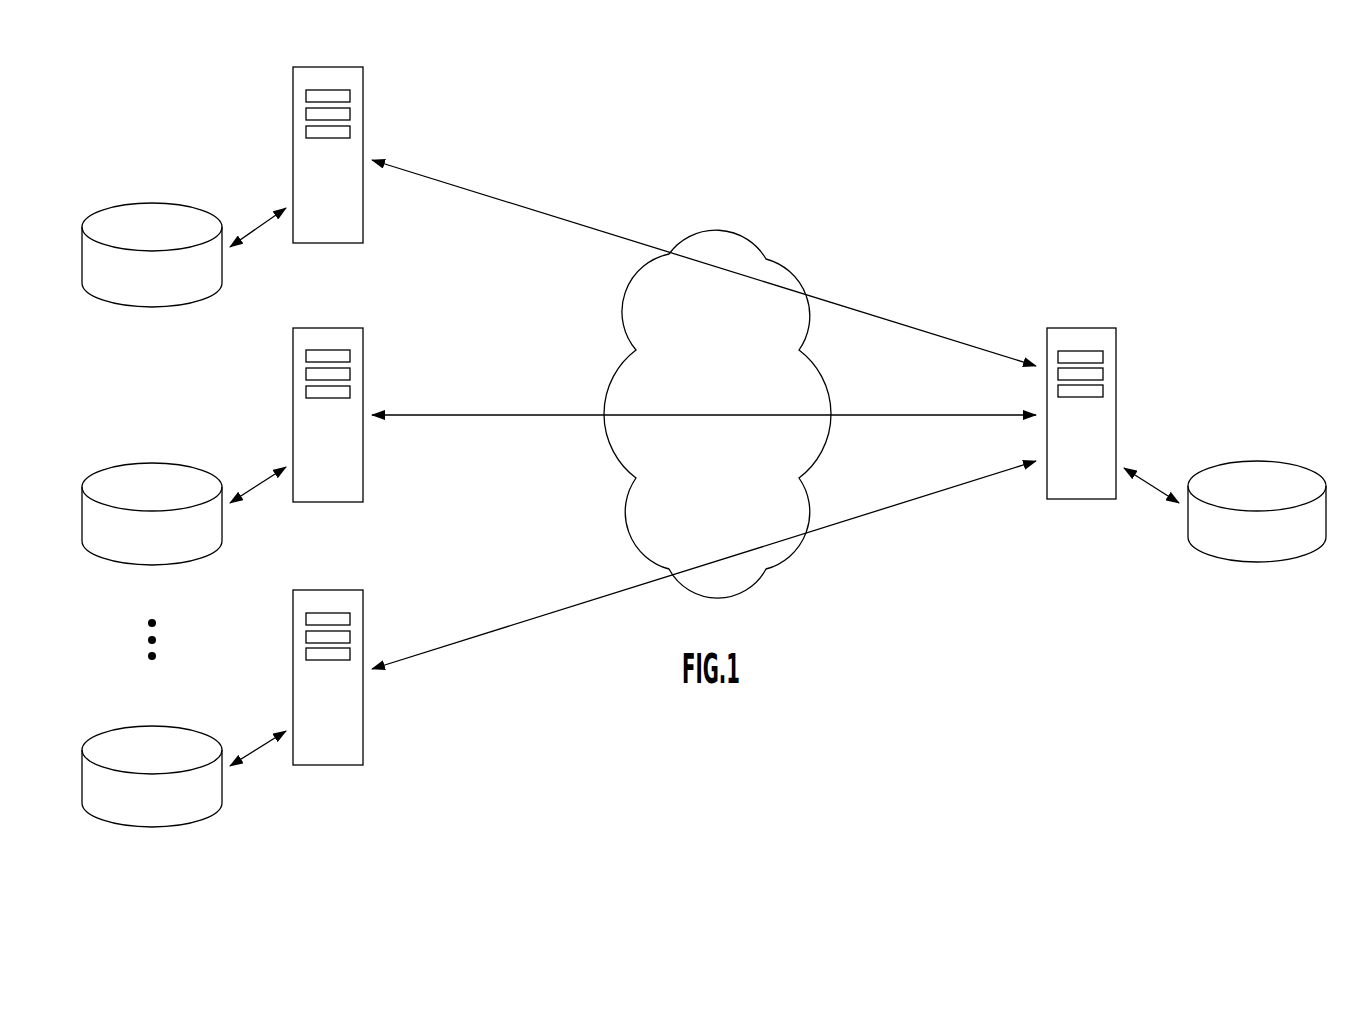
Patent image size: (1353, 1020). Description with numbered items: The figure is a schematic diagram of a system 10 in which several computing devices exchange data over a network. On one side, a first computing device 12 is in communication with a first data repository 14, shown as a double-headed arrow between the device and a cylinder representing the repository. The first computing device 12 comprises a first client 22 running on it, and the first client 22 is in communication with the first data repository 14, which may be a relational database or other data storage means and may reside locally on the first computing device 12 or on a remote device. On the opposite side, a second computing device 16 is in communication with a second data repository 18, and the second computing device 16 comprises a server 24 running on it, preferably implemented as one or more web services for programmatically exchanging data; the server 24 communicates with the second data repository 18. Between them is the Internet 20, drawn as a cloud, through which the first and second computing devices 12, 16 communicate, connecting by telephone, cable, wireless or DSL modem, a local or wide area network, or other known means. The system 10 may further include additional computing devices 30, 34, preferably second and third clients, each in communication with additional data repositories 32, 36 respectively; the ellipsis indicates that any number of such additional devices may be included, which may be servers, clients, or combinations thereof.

The system 10 is at (907, 234).
The first computing device 12 is at (376, 133).
The first data repository 14 is at (107, 206).
The second computing device 16 is at (1075, 315).
The second data repository 18 is at (1283, 561).
The Internet 20 is at (746, 240).
The first client 22 is at (293, 155).
The server 24 is at (1116, 414).
The additional computing device 30 is at (293, 413).
The additional data repository 32 is at (127, 463).
The additional computing device 34 is at (293, 690).
The additional data repository 36 is at (125, 726).